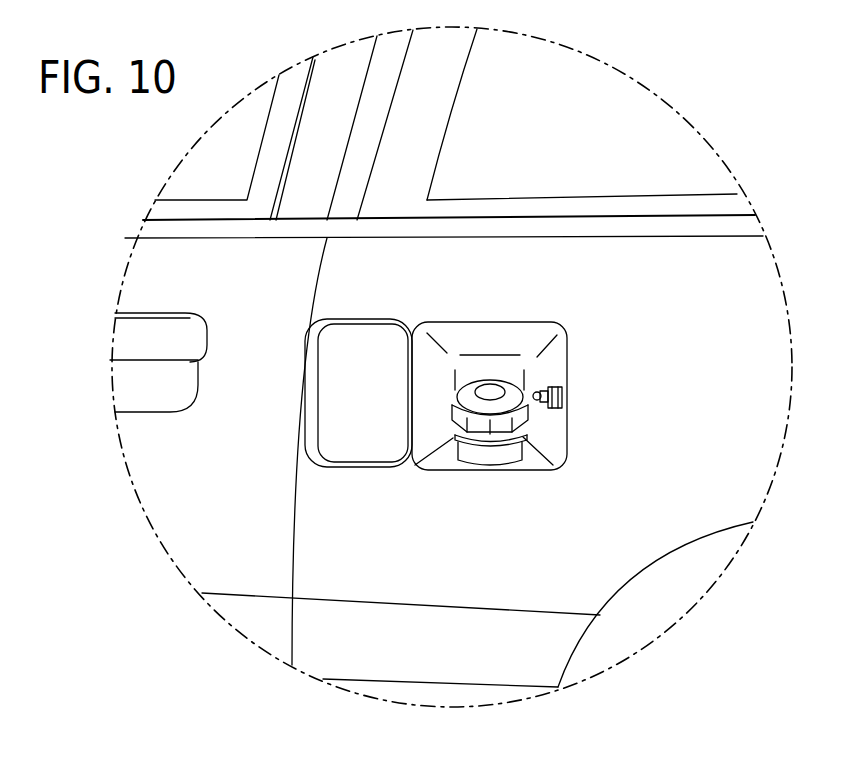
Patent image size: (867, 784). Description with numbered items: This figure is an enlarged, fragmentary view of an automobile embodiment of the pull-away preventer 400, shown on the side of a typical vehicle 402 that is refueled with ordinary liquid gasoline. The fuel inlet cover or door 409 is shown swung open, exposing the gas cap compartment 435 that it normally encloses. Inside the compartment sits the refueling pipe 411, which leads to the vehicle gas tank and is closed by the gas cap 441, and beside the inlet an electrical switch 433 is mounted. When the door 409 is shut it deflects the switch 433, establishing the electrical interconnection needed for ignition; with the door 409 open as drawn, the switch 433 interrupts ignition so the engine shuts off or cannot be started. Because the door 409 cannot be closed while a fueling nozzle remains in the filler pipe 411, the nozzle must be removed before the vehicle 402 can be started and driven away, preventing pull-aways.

The preventer 400 is at (625, 406).
The vehicle 402 is at (530, 177).
The fuel inlet cover 409 is at (357, 430).
The refueling pipe 411 is at (502, 455).
The electrical switch 433 is at (548, 388).
The gas cap compartment 435 is at (498, 352).
The gas cap 441 is at (493, 387).